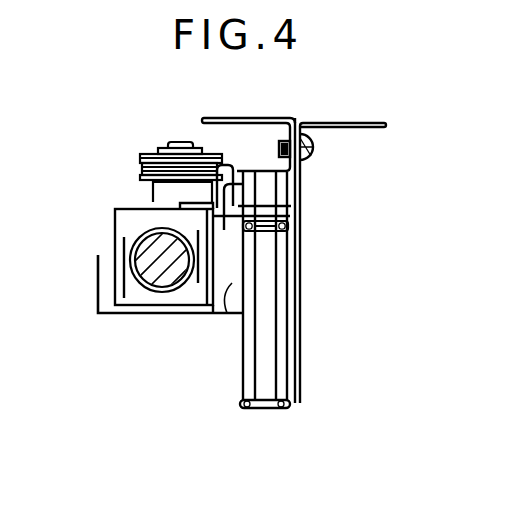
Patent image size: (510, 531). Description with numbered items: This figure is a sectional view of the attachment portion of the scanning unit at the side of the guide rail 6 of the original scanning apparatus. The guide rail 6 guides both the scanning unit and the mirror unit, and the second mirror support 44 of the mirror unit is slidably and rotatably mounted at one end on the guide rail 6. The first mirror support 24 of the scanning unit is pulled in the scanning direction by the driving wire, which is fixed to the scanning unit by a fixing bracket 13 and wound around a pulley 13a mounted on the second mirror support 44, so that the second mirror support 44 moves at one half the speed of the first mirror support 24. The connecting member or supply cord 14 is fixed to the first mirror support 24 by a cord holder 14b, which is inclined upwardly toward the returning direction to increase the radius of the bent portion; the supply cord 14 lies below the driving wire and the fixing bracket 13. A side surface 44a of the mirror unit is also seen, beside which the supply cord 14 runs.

The guide rail 6 is at (148, 242).
The fixing bracket 13 is at (228, 169).
The pulley 13a is at (153, 152).
The connecting member or supply cord 14 is at (267, 320).
The cord holder 14b is at (273, 237).
The first mirror support 24 is at (117, 238).
The second mirror support 44 is at (98, 272).
The side surface 44a is at (228, 313).